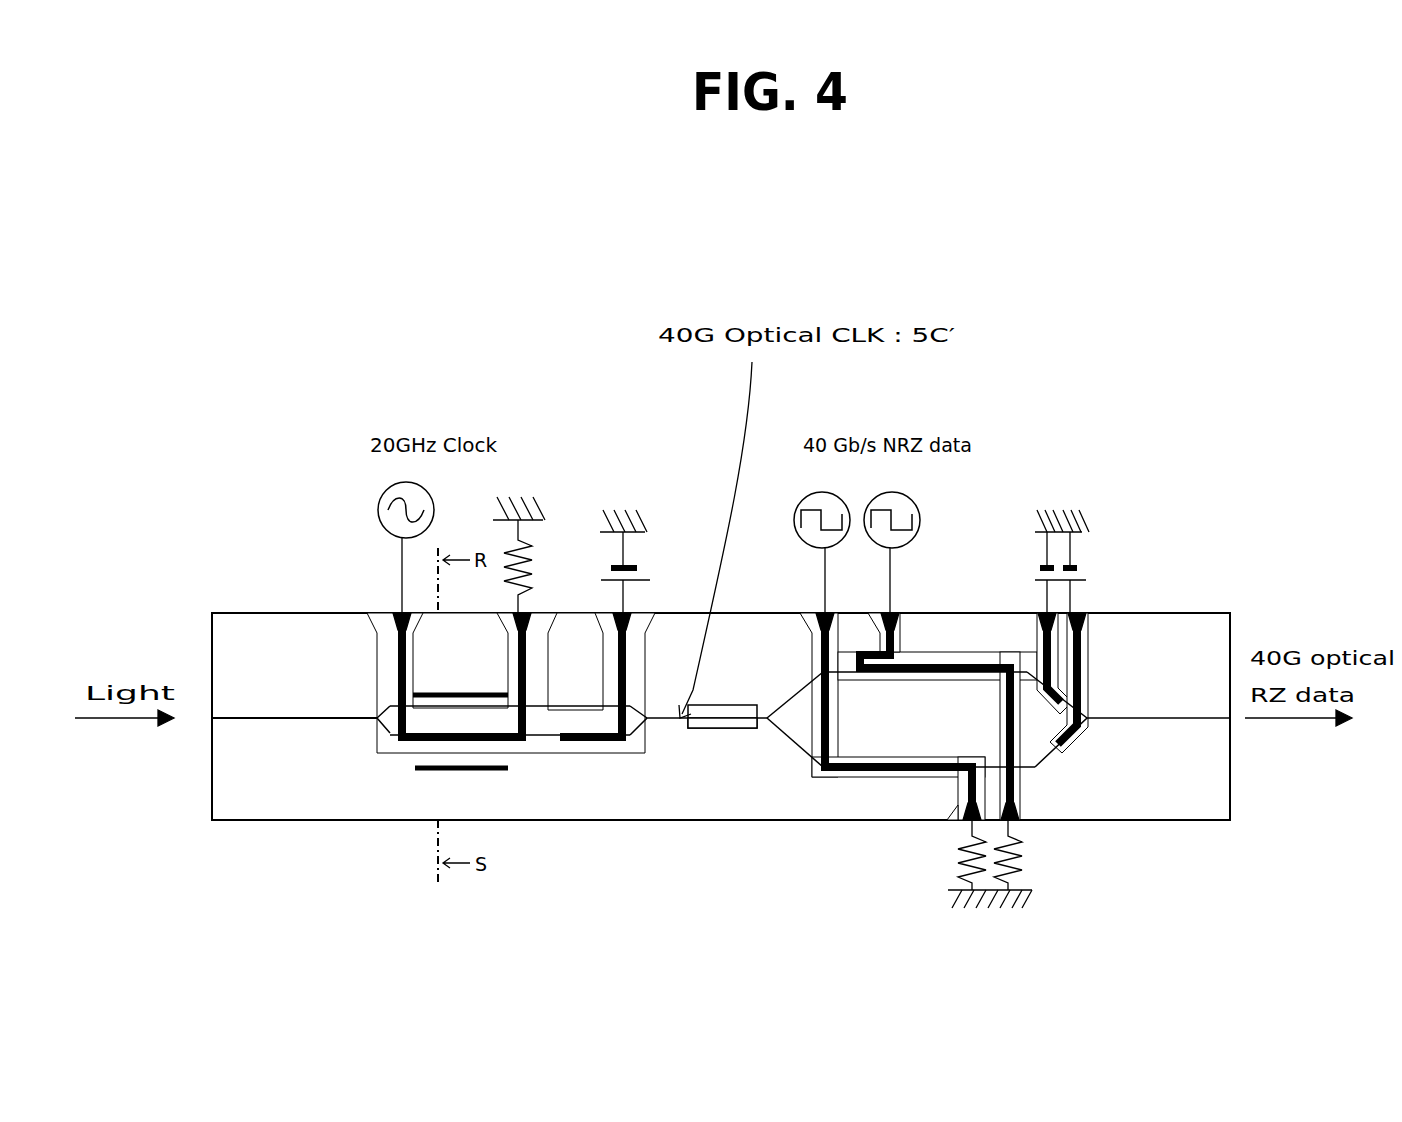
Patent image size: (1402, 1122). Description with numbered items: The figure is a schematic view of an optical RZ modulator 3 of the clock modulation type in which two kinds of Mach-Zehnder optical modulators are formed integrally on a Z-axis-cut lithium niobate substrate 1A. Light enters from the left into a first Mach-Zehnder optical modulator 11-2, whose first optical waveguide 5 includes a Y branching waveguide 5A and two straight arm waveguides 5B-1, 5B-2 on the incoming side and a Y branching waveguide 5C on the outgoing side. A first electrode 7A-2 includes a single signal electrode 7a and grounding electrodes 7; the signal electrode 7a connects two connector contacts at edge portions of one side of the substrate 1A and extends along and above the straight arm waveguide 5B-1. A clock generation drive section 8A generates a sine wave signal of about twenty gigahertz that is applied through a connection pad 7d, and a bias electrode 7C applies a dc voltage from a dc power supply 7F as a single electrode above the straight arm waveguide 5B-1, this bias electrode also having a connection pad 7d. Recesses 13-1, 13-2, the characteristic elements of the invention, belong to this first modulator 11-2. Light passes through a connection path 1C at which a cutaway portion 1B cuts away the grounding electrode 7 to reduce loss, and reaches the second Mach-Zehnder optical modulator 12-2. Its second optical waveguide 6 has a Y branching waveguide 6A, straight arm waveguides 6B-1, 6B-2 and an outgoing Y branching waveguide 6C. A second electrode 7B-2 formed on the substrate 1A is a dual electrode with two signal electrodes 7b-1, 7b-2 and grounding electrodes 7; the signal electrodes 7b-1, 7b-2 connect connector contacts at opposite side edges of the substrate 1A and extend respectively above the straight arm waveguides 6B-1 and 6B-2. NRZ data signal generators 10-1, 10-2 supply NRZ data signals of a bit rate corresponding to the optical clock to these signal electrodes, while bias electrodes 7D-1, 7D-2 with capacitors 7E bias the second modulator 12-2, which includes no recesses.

The substrate 1A is at (203, 767).
The cutaway portion 1B is at (702, 705).
The connection path 1C is at (730, 718).
The optical RZ modulator 3 is at (176, 596).
The first optical waveguide 5 is at (381, 728).
The Y branching waveguide 5A is at (382, 713).
The straight arm waveguide 5B-1 is at (545, 742).
The straight arm waveguide 5B-2 is at (545, 705).
The Y branching waveguide 5C is at (660, 752).
The second optical waveguide 6 is at (806, 690).
The Y branching waveguide 6A is at (786, 742).
The straight arm waveguide 6B-1 is at (978, 762).
The straight arm waveguide 6B-2 is at (838, 680).
The Y branching waveguide 6C is at (1038, 764).
The grounding electrode 7 is at (565, 628).
The signal electrode 7a is at (400, 756).
The first electrode 7A-2 is at (428, 730).
The signal electrode 7b-1 is at (850, 770).
The signal electrode 7b-2 is at (977, 645).
The second electrode 7B-2 is at (918, 772).
The bias electrode 7C is at (640, 666).
The connection pad 7d is at (397, 616).
The bias electrode 7D-1 is at (1090, 626).
The bias electrode 7D-2 is at (1022, 628).
The capacitor 7E is at (1076, 581).
The dc power supply 7F is at (630, 581).
The clock generation drive section 8A is at (378, 515).
The NRZ data signal generator 10-1 is at (843, 497).
The NRZ data signal generator 10-2 is at (920, 521).
The first Mach-Zehnder optical modulator 11-2 is at (537, 841).
The second Mach-Zehnder optical modulator 12-2 is at (1096, 834).
The recess 13-1 is at (490, 773).
The recess 13-2 is at (507, 691).